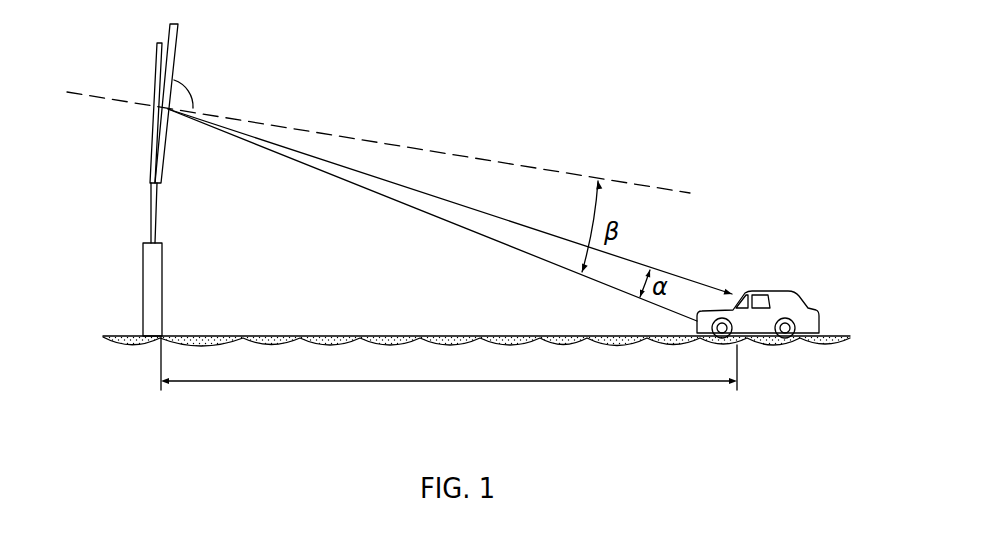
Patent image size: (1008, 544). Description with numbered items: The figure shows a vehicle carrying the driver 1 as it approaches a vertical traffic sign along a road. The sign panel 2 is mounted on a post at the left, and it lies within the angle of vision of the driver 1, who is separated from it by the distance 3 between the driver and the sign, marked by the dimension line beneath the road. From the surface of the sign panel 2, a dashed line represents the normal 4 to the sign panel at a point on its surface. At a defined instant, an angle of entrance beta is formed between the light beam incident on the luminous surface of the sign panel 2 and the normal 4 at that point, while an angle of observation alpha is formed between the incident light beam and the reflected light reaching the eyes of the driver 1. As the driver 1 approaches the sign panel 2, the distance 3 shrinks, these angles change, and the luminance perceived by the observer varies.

The driver 1 is at (757, 291).
The sign panel 2 is at (173, 73).
The distance between the driver and the sign 3 is at (553, 381).
The normal to the sign panel 4 is at (484, 160).